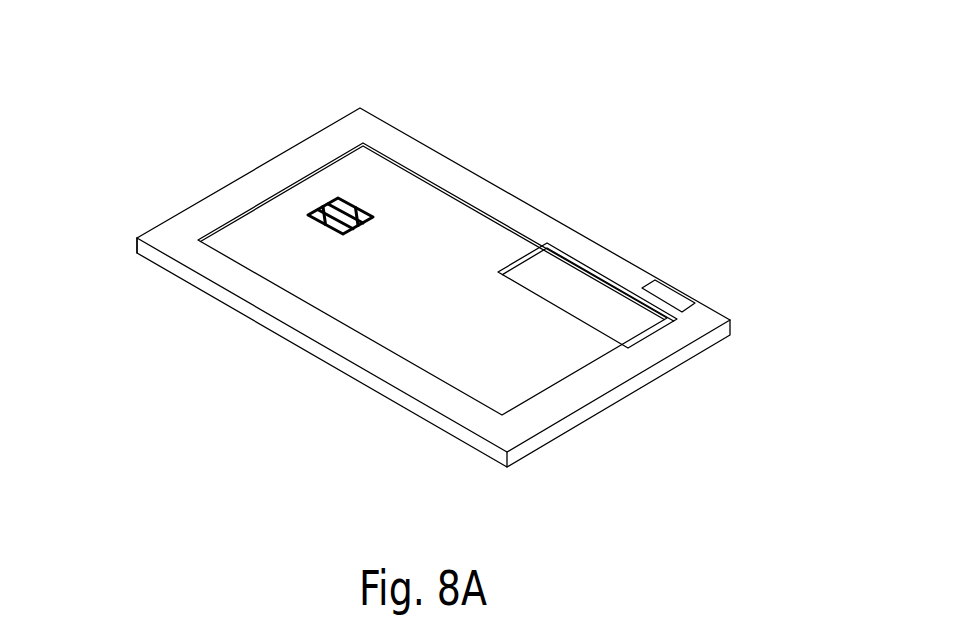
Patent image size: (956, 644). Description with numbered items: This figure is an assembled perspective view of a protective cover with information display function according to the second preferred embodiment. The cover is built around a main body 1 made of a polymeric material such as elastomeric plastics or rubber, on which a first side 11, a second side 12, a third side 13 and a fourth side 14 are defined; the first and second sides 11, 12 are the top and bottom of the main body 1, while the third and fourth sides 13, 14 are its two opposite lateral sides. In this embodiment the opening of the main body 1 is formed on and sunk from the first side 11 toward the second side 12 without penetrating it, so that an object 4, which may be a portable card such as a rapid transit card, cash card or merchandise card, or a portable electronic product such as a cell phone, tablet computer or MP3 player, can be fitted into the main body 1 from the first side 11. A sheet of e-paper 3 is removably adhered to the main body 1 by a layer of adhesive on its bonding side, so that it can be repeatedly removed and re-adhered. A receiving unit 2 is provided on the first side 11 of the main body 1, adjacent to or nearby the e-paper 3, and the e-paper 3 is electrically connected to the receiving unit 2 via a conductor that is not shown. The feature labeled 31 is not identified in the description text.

The main body 1 is at (157, 210).
The first side 11 is at (371, 130).
The second side 12 is at (257, 322).
The third side 13 is at (647, 375).
The fourth side 14 is at (136, 246).
The receiving unit 2 is at (690, 303).
The e-paper 3 is at (567, 267).
The slot step 31 is at (583, 236).
The object 4 is at (418, 234).